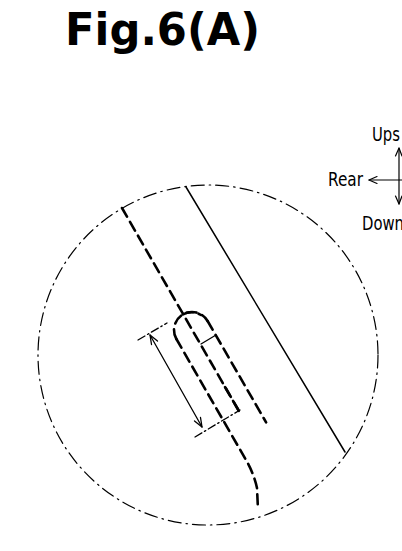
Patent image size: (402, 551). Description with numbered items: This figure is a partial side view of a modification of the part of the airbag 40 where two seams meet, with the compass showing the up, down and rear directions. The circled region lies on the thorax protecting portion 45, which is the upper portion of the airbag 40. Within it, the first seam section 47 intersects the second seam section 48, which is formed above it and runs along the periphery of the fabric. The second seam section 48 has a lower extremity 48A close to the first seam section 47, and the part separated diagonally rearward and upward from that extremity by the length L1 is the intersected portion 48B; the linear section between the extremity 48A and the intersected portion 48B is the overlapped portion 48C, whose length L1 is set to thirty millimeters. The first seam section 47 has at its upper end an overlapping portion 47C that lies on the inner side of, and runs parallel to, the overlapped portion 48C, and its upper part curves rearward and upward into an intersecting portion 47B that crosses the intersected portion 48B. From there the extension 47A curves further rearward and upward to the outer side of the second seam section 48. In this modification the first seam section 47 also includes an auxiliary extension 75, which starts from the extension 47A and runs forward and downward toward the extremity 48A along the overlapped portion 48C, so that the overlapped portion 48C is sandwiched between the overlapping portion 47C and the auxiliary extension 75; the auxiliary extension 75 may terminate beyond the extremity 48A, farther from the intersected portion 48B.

The airbag 40 is at (207, 222).
The thorax protecting portion 45 is at (166, 480).
The first seam section 47 is at (274, 432).
The extension 47A is at (195, 311).
The intersecting portion 47B is at (126, 318).
The overlapping portion 47C is at (217, 403).
The second seam section 48 is at (143, 222).
The extremity 48A is at (240, 415).
The intersected portion 48B is at (178, 313).
The overlapped portion 48C is at (217, 331).
The auxiliary extension 75 is at (230, 356).
The length of the overlapped portion L1 is at (172, 373).